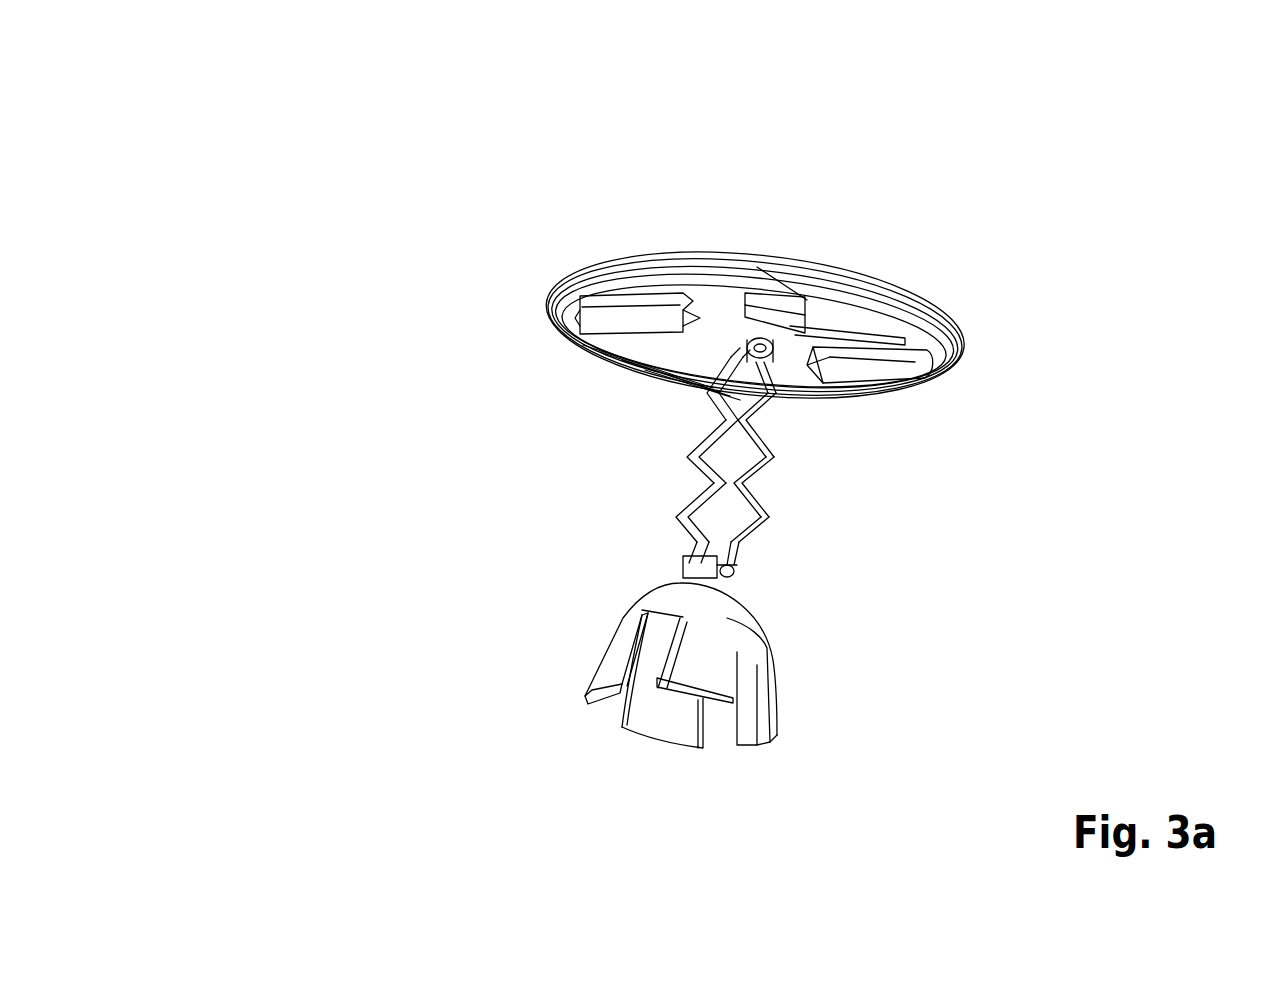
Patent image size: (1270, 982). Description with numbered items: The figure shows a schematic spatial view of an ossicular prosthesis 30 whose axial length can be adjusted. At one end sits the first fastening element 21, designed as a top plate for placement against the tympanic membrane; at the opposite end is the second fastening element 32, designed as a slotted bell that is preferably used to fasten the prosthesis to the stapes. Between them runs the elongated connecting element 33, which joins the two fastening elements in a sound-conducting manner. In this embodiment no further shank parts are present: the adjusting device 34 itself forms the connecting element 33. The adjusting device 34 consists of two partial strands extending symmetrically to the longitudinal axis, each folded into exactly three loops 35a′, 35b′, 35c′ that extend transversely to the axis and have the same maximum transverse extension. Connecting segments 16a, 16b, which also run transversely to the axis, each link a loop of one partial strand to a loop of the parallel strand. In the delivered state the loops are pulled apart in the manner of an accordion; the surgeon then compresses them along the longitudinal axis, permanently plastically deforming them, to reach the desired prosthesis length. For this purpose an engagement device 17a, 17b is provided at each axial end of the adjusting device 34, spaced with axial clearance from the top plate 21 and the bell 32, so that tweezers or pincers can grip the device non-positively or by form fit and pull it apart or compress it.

The ossicular prosthesis 30 is at (306, 155).
The first fastening element 21 is at (880, 283).
The elongated connecting element 33 is at (263, 332).
The adjusting device 34 is at (438, 410).
The engagement device 17a is at (728, 360).
The engagement device 17b is at (683, 561).
The connecting segment 16a is at (778, 393).
The connecting segment 16b is at (742, 538).
The loop 35a′ is at (707, 395).
The loop 35b′ is at (688, 457).
The loop 35c′ is at (677, 517).
The second fastening element 32 is at (607, 637).